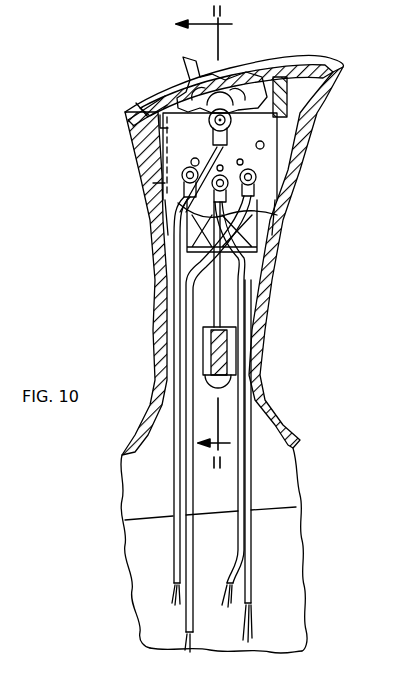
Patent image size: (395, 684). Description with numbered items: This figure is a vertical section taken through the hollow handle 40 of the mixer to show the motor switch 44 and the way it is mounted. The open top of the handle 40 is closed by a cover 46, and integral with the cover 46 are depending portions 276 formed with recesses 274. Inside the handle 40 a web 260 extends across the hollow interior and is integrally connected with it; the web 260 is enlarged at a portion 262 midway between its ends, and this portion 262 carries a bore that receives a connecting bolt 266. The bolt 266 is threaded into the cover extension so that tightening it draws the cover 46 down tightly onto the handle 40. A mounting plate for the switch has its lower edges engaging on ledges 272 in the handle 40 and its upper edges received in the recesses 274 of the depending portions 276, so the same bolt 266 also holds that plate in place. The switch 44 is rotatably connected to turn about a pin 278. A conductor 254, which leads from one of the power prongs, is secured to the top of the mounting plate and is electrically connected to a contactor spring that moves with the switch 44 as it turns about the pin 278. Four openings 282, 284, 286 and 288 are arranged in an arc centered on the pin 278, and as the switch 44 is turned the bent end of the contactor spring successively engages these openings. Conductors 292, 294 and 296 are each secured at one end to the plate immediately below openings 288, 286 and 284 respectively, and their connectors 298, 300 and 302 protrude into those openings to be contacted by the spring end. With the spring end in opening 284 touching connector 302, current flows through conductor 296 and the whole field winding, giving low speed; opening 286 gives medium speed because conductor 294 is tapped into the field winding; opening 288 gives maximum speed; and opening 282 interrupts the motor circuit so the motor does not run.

The handle 40 is at (274, 266).
The switch 44 is at (182, 79).
The cover 46 is at (293, 62).
The conductor 254 is at (174, 560).
The web 260 is at (237, 345).
The enlarged portion of web 262 is at (211, 346).
The connecting bolt 266 is at (213, 300).
The ledges 272 is at (163, 198).
The recesses 274 is at (288, 117).
The depending portions 276 is at (142, 115).
The pin 278 is at (221, 108).
The opening 282 is at (264, 144).
The opening 284 is at (250, 161).
The opening 286 is at (192, 158).
The opening 288 is at (185, 168).
The conductor 292 is at (236, 524).
The conductor 294 is at (250, 584).
The conductor 296 is at (186, 618).
The connector 298 is at (160, 186).
The connector 300 is at (252, 213).
The connector 302 is at (256, 178).